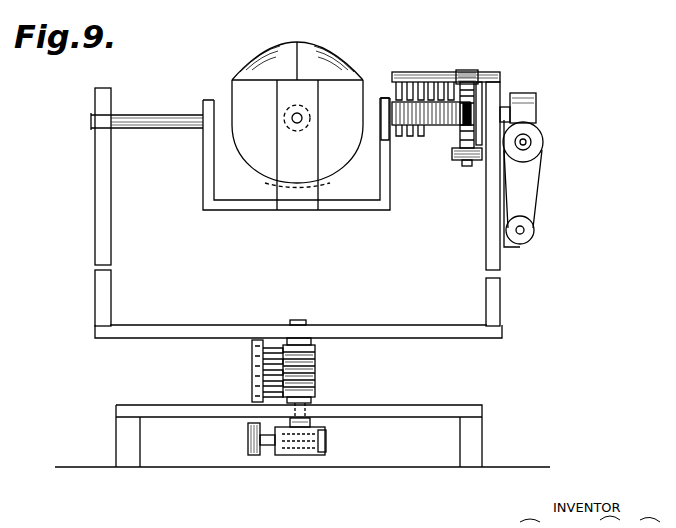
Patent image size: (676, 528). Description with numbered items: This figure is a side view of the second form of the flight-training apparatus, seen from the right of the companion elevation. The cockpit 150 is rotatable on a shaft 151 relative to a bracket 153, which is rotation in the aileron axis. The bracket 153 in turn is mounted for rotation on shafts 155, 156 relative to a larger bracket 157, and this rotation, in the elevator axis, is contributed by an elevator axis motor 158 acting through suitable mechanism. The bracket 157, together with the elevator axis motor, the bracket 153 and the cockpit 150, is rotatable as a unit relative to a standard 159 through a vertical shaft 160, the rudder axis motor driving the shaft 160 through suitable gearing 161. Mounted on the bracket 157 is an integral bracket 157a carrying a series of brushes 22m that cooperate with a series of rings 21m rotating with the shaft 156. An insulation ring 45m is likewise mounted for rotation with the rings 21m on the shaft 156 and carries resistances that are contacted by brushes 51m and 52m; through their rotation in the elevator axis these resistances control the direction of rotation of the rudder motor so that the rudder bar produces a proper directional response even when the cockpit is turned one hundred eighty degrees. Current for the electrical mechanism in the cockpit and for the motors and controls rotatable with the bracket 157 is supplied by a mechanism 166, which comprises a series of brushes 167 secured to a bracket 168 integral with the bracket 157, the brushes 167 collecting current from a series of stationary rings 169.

The cockpit 150 is at (266, 54).
The shaft 151 is at (302, 113).
The bracket 153 is at (327, 211).
The shaft 155 is at (143, 113).
The shaft 156 is at (507, 96).
The bracket 157 is at (97, 232).
The bracket 157a is at (500, 72).
The elevator axis motor 158 is at (520, 247).
The standard 159 is at (483, 406).
The vertical shaft 160 is at (312, 418).
The gearing 161 is at (305, 456).
The mechanism 166 is at (247, 366).
The brushes 167 is at (270, 348).
The bracket 168 is at (256, 344).
The stationary rings 169 is at (316, 360).
The rings 21m is at (400, 137).
The brushes 22m is at (447, 72).
The insulation ring 45m is at (476, 100).
The brush 51m is at (468, 167).
The brush 52m is at (468, 75).